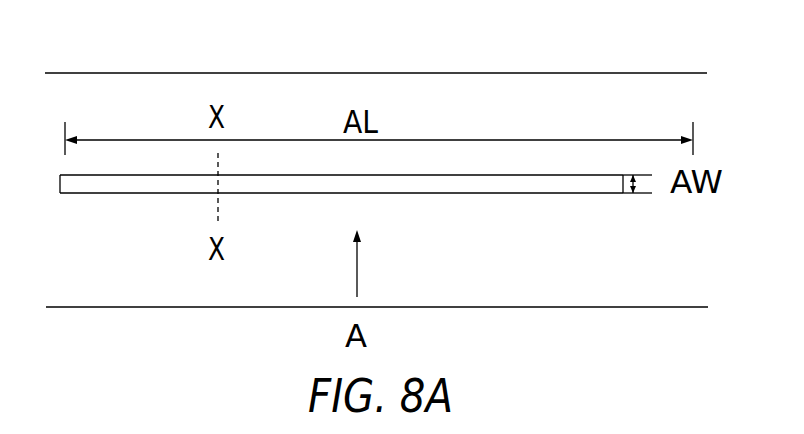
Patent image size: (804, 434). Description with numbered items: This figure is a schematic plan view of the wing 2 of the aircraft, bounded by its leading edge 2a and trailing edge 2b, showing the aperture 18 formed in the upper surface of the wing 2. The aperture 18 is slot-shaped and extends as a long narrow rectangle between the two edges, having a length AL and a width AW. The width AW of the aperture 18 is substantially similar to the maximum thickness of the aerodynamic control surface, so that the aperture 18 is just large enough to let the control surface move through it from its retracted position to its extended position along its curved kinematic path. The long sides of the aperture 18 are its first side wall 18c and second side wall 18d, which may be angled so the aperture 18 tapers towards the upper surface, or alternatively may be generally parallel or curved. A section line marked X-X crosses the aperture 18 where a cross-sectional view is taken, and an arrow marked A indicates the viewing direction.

The substrate / fibre 2 is at (380, 194).
The lower side of substrate 2a is at (640, 307).
The upper side of substrate 2b is at (112, 75).
The antenna element 18 is at (345, 184).
The lower edge of antenna element 18c is at (503, 193).
The upper edge of antenna element 18d is at (582, 177).